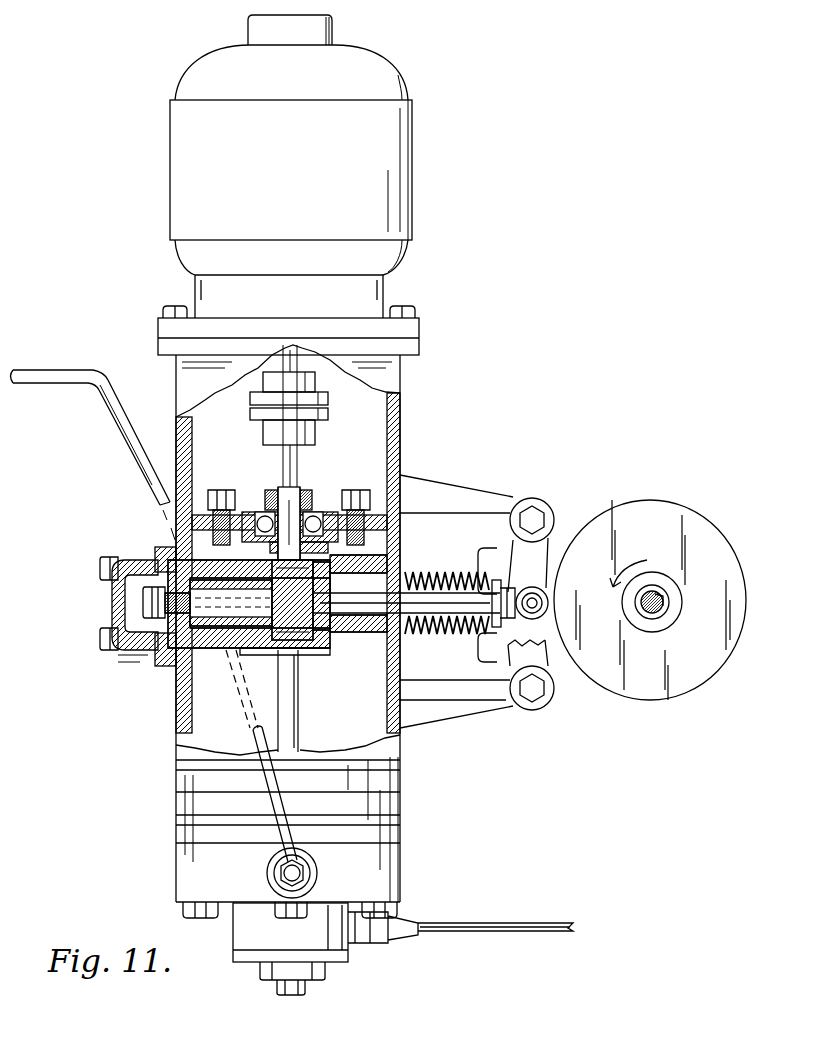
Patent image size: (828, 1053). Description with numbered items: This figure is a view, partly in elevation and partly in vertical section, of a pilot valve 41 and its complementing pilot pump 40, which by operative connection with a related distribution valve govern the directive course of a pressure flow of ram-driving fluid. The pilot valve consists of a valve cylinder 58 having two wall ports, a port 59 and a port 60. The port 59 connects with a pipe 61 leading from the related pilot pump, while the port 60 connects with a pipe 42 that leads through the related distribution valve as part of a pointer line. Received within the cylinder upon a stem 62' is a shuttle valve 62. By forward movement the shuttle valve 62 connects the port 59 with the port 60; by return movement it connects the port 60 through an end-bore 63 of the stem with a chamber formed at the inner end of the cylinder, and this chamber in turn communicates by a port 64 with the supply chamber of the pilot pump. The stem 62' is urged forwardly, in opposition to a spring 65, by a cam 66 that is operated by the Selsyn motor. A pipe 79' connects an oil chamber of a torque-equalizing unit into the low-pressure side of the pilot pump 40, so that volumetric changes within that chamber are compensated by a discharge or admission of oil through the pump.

The pilot pump 40 is at (412, 881).
The pilot valve 41 is at (147, 549).
The pipe 42 is at (148, 452).
The valve cylinder 58 is at (300, 647).
The wall port 59 is at (243, 646).
The wall port 60 is at (197, 566).
The pipe 61 is at (256, 738).
The shuttle valve 62 is at (129, 618).
The stem 62' is at (350, 593).
The end-bore 63 is at (318, 607).
The port 64 is at (318, 555).
The spring 65 is at (446, 576).
The cam 66 is at (605, 503).
The pipe 79' is at (495, 911).